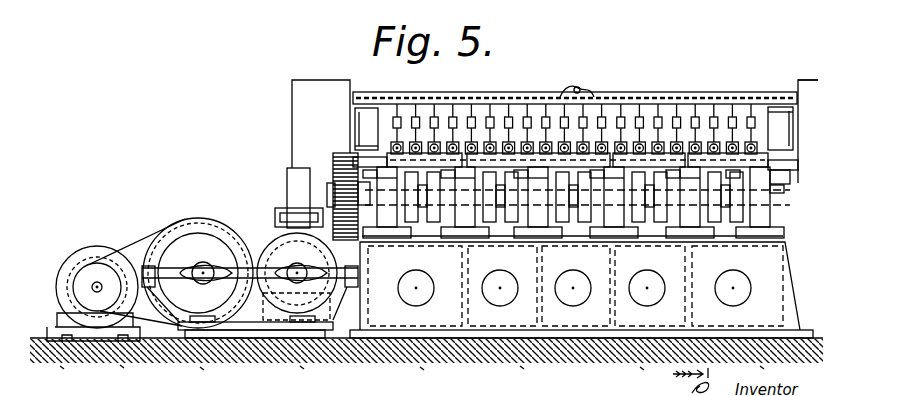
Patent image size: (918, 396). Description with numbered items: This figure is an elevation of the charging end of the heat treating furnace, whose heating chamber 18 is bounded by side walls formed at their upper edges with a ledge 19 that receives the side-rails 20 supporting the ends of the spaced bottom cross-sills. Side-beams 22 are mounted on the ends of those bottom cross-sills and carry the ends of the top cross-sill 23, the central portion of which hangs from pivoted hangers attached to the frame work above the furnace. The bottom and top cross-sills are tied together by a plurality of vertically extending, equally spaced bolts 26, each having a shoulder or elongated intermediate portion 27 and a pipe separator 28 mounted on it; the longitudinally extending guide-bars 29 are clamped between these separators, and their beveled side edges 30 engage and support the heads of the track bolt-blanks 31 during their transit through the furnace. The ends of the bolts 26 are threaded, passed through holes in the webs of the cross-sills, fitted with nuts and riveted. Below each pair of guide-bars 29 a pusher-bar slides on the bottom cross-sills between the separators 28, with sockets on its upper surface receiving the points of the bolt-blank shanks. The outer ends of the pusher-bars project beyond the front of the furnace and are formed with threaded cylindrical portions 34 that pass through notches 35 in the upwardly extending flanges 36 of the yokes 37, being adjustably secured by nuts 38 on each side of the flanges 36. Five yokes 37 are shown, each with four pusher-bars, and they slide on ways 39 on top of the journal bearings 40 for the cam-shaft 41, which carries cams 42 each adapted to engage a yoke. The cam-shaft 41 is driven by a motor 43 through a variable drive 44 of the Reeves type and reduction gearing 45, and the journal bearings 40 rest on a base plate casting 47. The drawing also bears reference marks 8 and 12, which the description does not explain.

The direction arrow 8 is at (680, 80).
The frame 12 is at (302, 90).
The heating chamber 18 is at (782, 82).
The ledge 19 is at (786, 186).
The side-rails 20 is at (338, 153).
The side-beams 22 is at (363, 115).
The top cross-sill 23 is at (372, 92).
The bolts 26 is at (465, 96).
The shoulder or elongated intermediate portion 27 is at (535, 100).
The pipe separator 28 is at (748, 137).
The guide-bars 29 is at (707, 122).
The beveled side edges 30 is at (650, 100).
The track bolt-blanks 31 is at (432, 96).
The threaded cylindrical portions 34 is at (592, 92).
The notches 35 is at (595, 100).
The upwardly extending flanges 36 is at (512, 100).
The yokes 37 is at (432, 220).
The nuts 38 is at (606, 92).
The ways 39 is at (532, 220).
The journal bearings 40 is at (388, 222).
The cam-shaft 41 is at (728, 222).
The cams 42 is at (657, 233).
The motor 43 is at (93, 247).
The variable drive 44 is at (197, 223).
The reduction gearing 45 is at (292, 193).
The base plate casting 47 is at (517, 322).